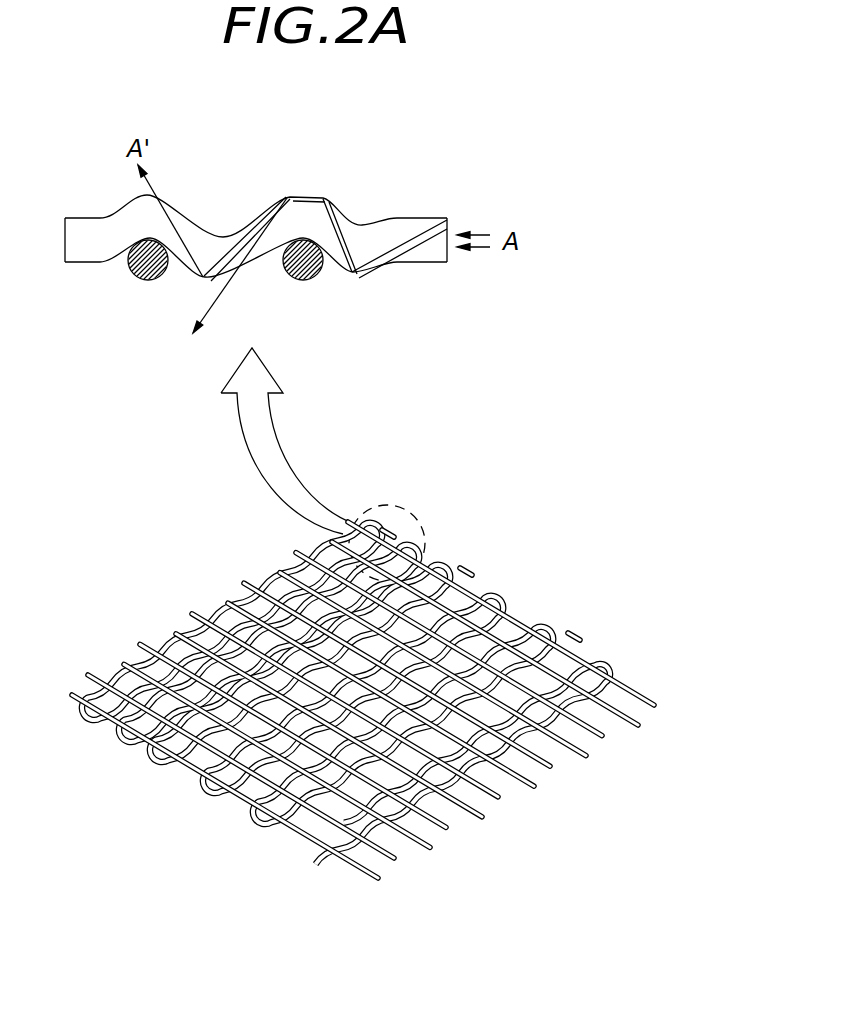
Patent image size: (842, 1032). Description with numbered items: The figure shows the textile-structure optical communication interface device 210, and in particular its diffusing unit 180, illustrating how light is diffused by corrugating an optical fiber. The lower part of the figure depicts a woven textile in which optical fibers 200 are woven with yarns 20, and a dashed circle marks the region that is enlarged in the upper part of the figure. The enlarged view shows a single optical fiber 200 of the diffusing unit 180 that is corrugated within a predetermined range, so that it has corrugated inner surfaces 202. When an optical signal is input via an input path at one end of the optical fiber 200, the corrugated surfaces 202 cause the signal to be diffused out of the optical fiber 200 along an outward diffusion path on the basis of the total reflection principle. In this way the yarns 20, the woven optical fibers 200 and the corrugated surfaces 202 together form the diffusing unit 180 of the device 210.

The diffusing unit 180 is at (279, 145).
The optical fiber 200 is at (262, 580).
The yarn 20 is at (148, 281).
The corrugated surface 202 is at (177, 184).
The textile-structure optical communication interface device 210 is at (339, 561).